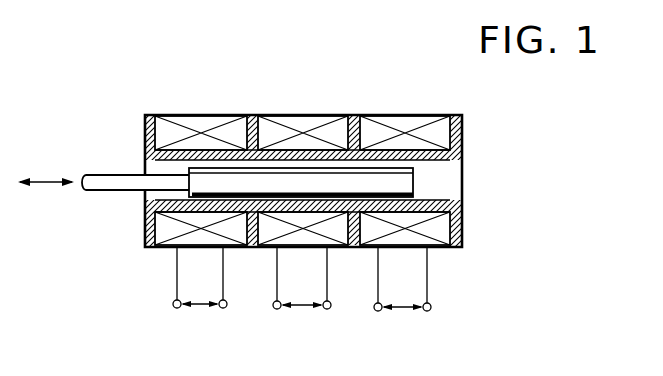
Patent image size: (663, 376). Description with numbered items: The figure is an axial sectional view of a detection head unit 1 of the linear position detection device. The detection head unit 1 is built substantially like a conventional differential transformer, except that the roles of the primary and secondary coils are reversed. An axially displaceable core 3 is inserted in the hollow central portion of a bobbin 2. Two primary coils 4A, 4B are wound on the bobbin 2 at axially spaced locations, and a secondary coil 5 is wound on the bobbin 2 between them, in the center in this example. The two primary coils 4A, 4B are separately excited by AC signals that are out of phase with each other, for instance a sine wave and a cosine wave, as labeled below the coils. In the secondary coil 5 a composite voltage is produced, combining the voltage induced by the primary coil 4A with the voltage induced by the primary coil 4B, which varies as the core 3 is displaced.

The detection head unit 1 is at (450, 276).
The bobbin 2 is at (145, 222).
The core 3 is at (413, 181).
The primary coil 4A is at (188, 115).
The primary coil 4B is at (408, 115).
The secondary coil 5 is at (294, 115).